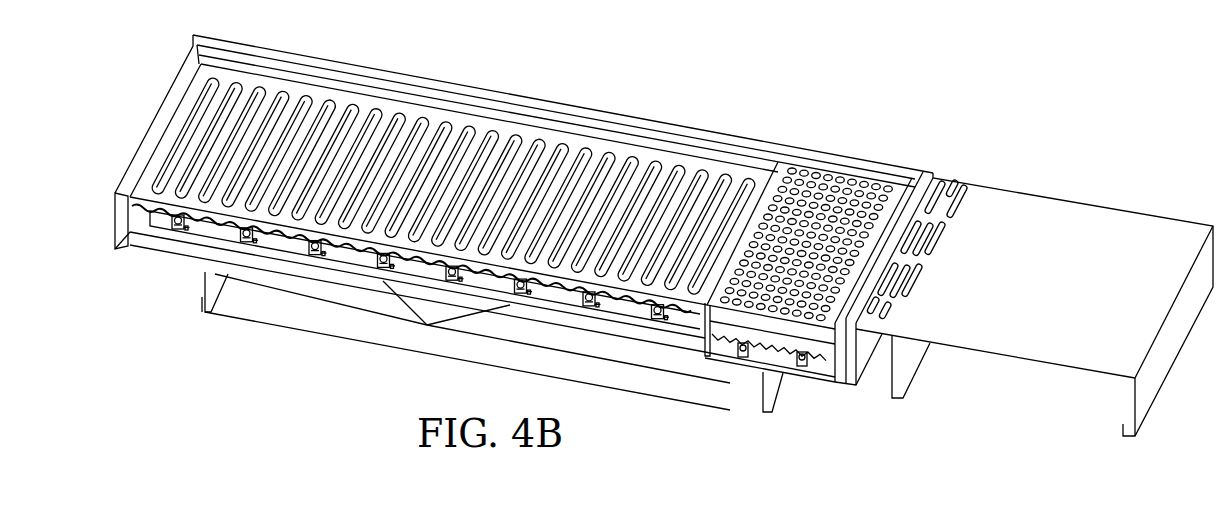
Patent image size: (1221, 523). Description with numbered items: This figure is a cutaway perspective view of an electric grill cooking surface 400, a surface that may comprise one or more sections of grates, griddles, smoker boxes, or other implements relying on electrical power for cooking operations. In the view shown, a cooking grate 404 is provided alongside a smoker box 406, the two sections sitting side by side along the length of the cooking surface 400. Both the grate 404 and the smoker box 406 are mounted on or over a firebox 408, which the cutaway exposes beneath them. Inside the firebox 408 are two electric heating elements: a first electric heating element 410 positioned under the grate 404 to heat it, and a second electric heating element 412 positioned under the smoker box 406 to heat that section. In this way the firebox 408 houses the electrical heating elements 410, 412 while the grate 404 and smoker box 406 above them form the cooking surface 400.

The electric grill cooking surface 400 is at (676, 117).
The cooking grate 404 is at (503, 127).
The smoker box 406 is at (871, 188).
The firebox 408 is at (115, 215).
The first electric heating element 410 is at (177, 226).
The second electric heating element 412 is at (740, 352).